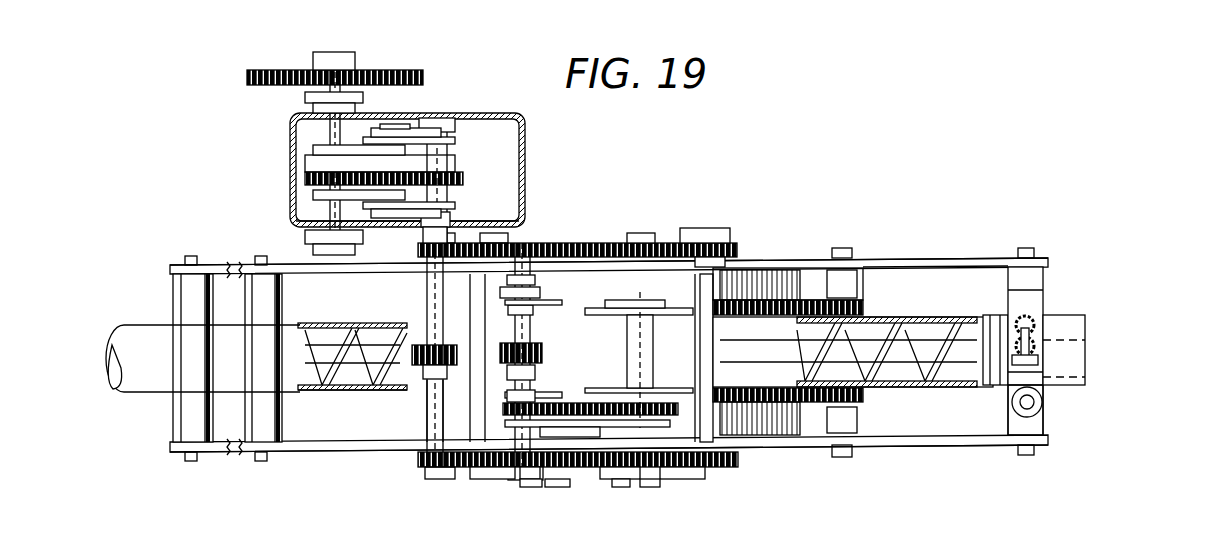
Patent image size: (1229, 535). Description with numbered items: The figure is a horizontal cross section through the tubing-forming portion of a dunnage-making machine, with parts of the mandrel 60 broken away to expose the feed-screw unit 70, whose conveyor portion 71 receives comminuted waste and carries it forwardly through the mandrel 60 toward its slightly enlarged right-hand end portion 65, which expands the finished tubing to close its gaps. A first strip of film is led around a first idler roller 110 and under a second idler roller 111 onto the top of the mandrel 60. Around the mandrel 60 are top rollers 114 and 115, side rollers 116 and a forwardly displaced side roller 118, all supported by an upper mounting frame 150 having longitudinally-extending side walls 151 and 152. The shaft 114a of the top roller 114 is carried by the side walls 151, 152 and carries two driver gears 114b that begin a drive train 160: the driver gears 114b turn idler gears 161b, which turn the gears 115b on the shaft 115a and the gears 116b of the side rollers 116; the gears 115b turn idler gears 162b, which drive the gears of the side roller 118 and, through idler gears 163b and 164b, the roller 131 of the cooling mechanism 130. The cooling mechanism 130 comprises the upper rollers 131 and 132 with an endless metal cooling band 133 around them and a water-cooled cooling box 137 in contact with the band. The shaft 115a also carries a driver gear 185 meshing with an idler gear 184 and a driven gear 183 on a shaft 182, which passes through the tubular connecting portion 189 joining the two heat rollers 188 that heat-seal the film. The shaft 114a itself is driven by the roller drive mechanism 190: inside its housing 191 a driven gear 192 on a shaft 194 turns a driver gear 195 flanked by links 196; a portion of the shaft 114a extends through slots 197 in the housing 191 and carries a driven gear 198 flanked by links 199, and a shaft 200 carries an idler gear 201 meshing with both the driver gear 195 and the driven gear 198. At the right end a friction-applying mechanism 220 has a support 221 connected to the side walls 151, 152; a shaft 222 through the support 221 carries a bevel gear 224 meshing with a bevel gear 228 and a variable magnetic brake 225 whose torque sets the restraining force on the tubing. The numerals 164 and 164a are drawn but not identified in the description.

The mandrel 60 is at (133, 397).
The right-hand end portion of the mandrel 65 is at (1075, 344).
The feed-screw unit 70 is at (327, 343).
The conveyor portion 71 is at (336, 393).
The first idler roller 110 is at (178, 284).
The second idler roller 111 is at (272, 281).
The top roller 114 is at (425, 372).
The shaft 114a is at (427, 426).
The driver gears 114b is at (425, 262).
The top roller 115 is at (536, 350).
The shaft 115a is at (533, 385).
The gears 115b is at (542, 243).
The side roller 116 is at (468, 338).
The gears 116b is at (490, 245).
The side roller 118 is at (575, 307).
The cooling mechanism 130 is at (890, 298).
The roller 131 is at (748, 290).
The roller 132 is at (852, 300).
The endless metal cooling band 133 is at (832, 272).
The cooling box 137 is at (775, 268).
The upper mounting frame 150 is at (890, 256).
The side wall 151 is at (935, 447).
The side wall 152 is at (935, 258).
The drive train 160 is at (742, 243).
The idler gears 161b is at (470, 472).
The idler gears 162b is at (640, 243).
The idler gears 163b is at (690, 243).
The sprocket 164 is at (690, 480).
The screw housing 164a is at (708, 350).
The idler gears 164b is at (715, 243).
The shaft 182 is at (650, 487).
The driven gear 183 is at (623, 487).
The idler gear 184 is at (567, 487).
The driver gear 185 is at (540, 487).
The heat rollers 188 is at (665, 388).
The tubular connecting portion 189 is at (628, 356).
The roller drive mechanism 190 is at (309, 153).
The housing 191 is at (510, 113).
The driven gear 192 is at (247, 78).
The shaft 194 is at (330, 132).
The driver gear 195 is at (305, 179).
The links 196 is at (313, 150).
The slots 197 is at (432, 118).
The driven gear 198 is at (462, 170).
The links 199 is at (455, 141).
The shaft 200 is at (392, 124).
The idler gear 201 is at (362, 188).
The friction-applying mechanism 220 is at (1045, 283).
The support 221 is at (1037, 425).
The shaft 222 is at (1040, 352).
The bevel gear 224 is at (1032, 316).
The variable magnetic brake 225 is at (1042, 403).
The bevel gear 228 is at (1038, 336).